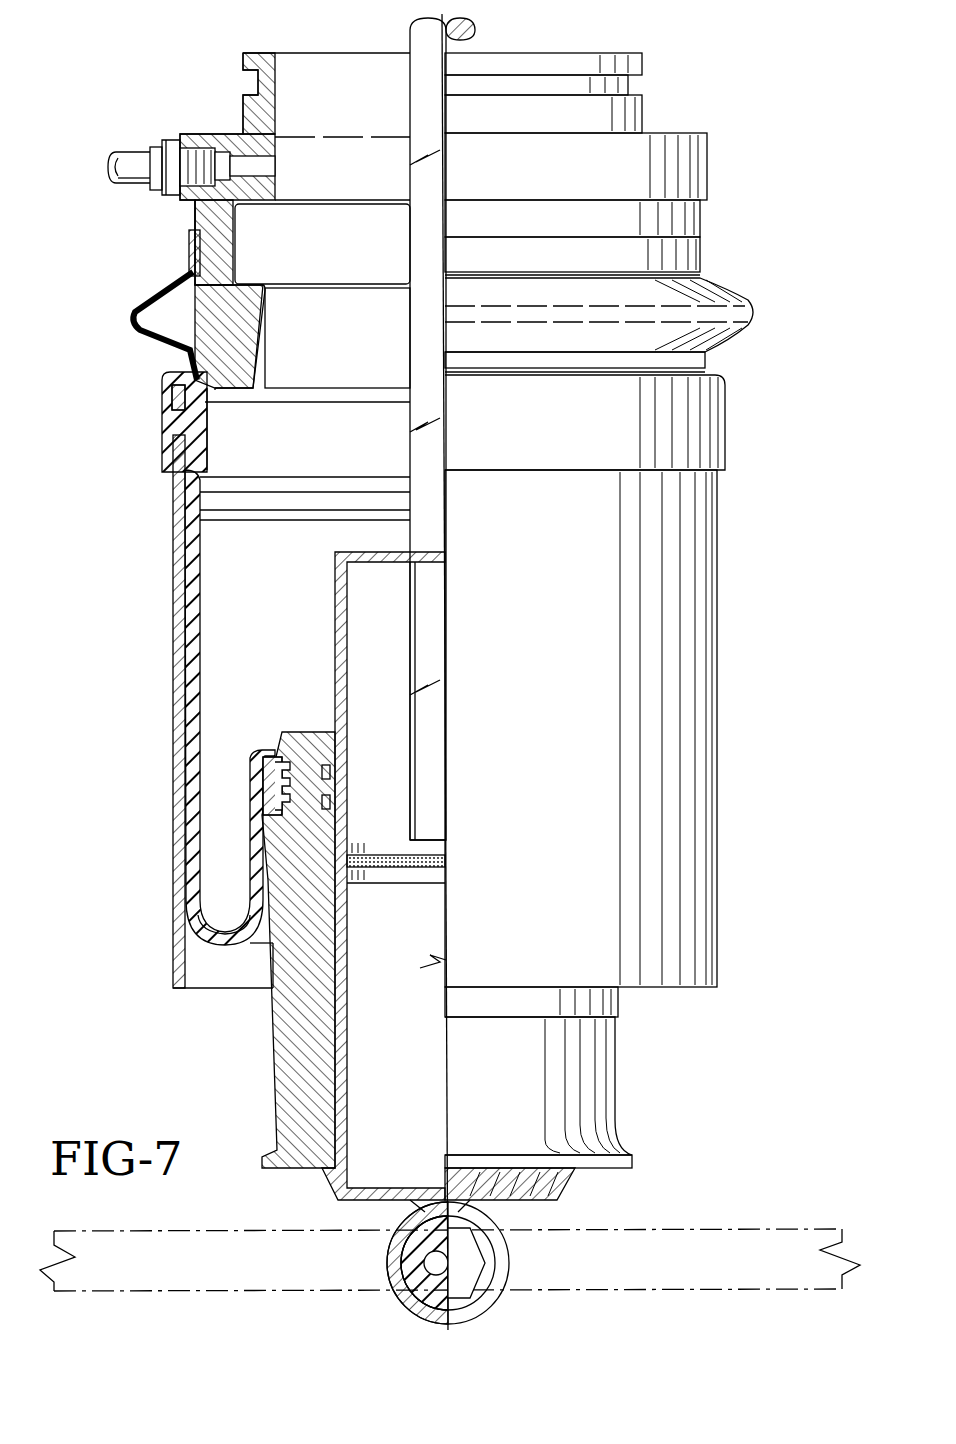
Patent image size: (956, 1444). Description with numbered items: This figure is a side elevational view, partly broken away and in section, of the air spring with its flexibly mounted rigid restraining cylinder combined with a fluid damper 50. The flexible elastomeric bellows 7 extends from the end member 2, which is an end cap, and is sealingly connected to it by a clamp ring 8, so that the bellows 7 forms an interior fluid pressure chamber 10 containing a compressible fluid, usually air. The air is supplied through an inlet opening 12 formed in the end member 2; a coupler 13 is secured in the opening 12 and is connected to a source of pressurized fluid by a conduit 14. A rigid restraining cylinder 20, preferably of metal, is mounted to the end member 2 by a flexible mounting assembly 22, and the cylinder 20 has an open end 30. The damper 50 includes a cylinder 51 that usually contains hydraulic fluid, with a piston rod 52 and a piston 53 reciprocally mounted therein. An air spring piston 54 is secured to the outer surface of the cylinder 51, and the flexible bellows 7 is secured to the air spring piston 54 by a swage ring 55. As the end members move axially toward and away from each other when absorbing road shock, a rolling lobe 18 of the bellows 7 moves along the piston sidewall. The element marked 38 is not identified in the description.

The end member 2 is at (708, 162).
The flexible elastomeric sleeve or bellows 7 is at (188, 692).
The clamp ring 8 is at (185, 332).
The interior fluid pressure chamber 10 is at (272, 596).
The inlet opening 12 is at (240, 160).
The coupler 13 is at (165, 190).
The conduit 14 is at (135, 165).
The rolling lobe 18 is at (222, 950).
The rigid restraining cylinder 20 is at (176, 590).
The flexible mounting assembly 22 is at (738, 296).
The open end 30 is at (192, 992).
The seal 38 is at (190, 262).
The damper 50 is at (410, 366).
The cylinder 51 is at (342, 694).
The piston rod 52 is at (428, 662).
The piston 53 is at (398, 880).
The air spring piston 54 is at (278, 1078).
The swage ring 55 is at (258, 786).